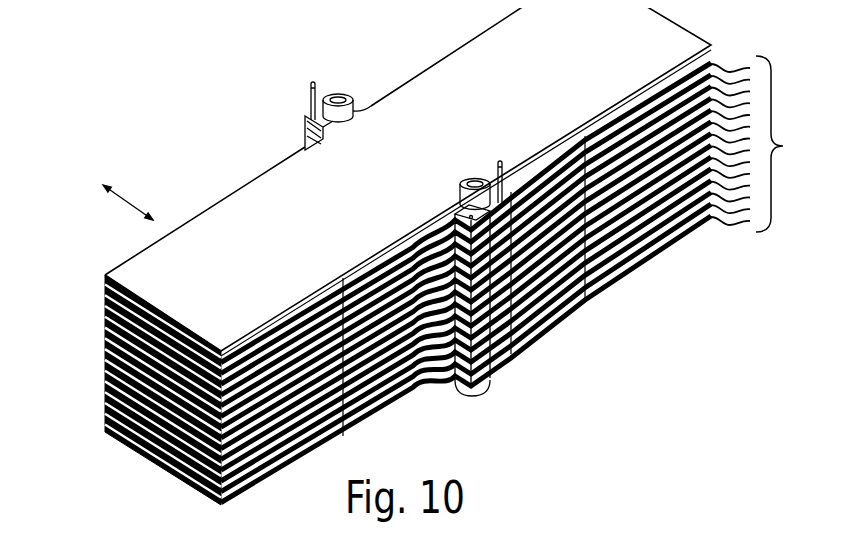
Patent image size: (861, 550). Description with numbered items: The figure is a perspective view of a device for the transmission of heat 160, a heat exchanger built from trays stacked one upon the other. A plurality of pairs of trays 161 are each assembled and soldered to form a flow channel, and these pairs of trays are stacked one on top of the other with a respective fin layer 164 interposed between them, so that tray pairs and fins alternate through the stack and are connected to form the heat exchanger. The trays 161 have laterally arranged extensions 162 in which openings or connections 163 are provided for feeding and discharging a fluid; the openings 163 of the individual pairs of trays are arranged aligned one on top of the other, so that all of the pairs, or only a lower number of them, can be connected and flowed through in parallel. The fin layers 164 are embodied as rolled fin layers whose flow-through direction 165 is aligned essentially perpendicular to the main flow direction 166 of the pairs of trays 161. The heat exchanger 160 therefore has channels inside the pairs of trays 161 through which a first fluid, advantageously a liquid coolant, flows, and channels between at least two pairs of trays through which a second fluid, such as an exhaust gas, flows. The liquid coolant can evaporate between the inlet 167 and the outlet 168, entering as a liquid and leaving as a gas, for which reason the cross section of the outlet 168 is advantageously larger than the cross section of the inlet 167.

The device for the transmission of heat 160 is at (771, 96).
The pairs of trays 161 is at (523, 283).
The laterally arranged extensions 162 is at (297, 112).
The openings or connections 163 is at (332, 90).
The fin layer 164 is at (97, 268).
The flow-through direction 165 is at (124, 456).
The main flow direction 166 is at (133, 198).
The inlet 167 is at (448, 382).
The outlet 168 is at (318, 70).